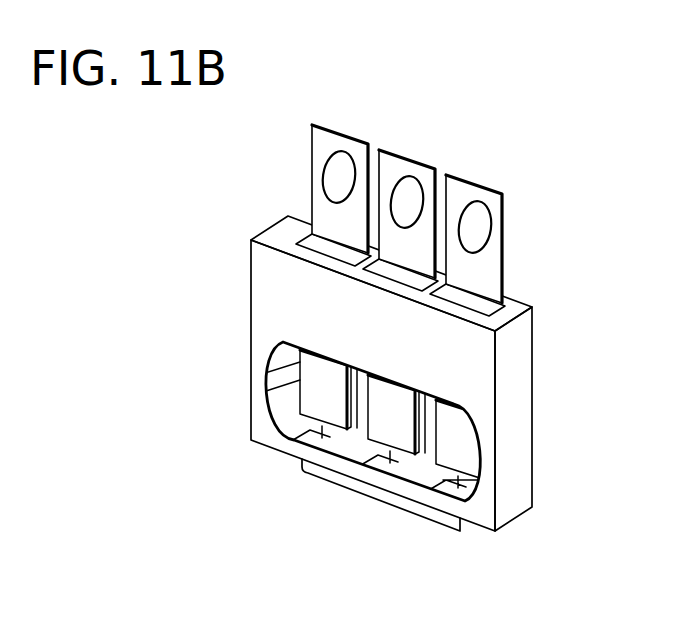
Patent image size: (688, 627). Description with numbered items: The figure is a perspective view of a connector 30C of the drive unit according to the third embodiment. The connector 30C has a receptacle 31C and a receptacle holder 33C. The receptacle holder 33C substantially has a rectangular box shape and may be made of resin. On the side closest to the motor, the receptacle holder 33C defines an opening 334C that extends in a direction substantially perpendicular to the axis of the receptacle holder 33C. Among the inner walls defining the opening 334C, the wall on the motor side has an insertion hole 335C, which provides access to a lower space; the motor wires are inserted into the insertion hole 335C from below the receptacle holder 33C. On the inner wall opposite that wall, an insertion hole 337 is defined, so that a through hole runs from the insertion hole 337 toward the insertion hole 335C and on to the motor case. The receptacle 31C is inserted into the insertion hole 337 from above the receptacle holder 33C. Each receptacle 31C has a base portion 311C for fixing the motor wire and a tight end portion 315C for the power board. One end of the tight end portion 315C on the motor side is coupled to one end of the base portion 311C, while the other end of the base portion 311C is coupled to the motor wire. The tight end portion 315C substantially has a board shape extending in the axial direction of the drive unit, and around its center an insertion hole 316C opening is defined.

The connector 30C is at (529, 180).
The receptacle 31C is at (488, 200).
The receptacle holder 33C is at (523, 380).
The insertion hole 337 is at (323, 253).
The base portion 311C is at (460, 457).
The tight end portion 315C is at (493, 258).
The insertion hole 316C is at (477, 225).
The opening 334C is at (417, 475).
The insertion hole 335C is at (398, 458).